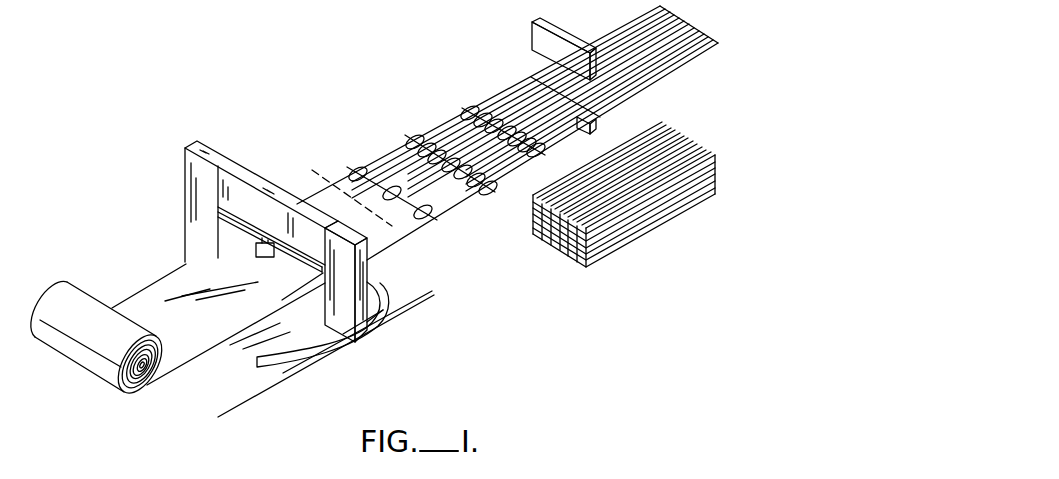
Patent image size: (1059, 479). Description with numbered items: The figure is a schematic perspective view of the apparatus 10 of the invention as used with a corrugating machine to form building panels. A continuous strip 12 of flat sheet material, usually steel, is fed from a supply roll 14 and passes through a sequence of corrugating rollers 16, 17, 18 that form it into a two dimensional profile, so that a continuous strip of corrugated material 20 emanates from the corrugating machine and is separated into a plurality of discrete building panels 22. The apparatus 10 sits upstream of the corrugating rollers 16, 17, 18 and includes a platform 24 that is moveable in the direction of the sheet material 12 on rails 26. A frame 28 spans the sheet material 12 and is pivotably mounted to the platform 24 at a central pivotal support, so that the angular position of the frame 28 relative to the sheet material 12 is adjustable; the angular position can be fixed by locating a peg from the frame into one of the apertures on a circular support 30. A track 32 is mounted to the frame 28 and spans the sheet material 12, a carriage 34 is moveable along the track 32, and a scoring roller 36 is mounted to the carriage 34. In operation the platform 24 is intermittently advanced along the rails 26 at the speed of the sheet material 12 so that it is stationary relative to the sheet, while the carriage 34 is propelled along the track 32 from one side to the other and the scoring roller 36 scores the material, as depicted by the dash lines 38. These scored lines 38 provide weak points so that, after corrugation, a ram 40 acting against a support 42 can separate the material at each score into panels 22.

The apparatus 10 is at (183, 142).
The continuous strip of flat sheet material 12 is at (192, 353).
The supply roll 14 is at (58, 297).
The corrugating roller 16 is at (348, 172).
The corrugating roller 17 is at (405, 137).
The corrugating roller 18 is at (462, 108).
The continuous strip of corrugated material 20 is at (507, 102).
The building panels 22 is at (716, 156).
The platform 24 is at (300, 368).
The rails 26 is at (252, 403).
The frame 28 is at (245, 178).
The circular support 30 is at (374, 294).
The track 32 is at (248, 237).
The carriage 34 is at (270, 258).
The scoring roller 36 is at (265, 270).
The scored lines 38 is at (535, 78).
The ram 40 is at (562, 33).
The support 42 is at (595, 128).